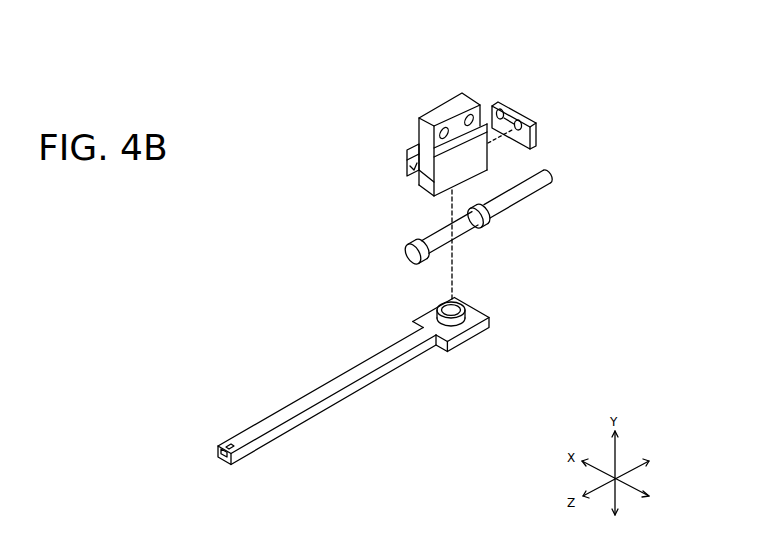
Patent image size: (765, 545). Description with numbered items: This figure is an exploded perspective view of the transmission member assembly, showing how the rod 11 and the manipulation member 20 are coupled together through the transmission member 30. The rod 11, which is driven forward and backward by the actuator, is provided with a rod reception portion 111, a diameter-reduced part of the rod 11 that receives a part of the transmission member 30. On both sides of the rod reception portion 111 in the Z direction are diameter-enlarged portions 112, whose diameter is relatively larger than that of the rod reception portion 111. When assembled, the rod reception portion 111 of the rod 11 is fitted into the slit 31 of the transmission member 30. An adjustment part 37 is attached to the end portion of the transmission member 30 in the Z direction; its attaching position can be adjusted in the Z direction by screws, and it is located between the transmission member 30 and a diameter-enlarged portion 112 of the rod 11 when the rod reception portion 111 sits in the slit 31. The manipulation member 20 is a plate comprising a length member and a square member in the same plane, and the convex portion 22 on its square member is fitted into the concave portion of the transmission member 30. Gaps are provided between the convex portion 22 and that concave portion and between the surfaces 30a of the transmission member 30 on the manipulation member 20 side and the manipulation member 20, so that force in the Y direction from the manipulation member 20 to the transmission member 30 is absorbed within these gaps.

The transmission member 30 is at (408, 162).
The surfaces of the transmission member 30a is at (437, 200).
The slit 31 is at (418, 178).
The adjustment part 37 is at (537, 129).
The rod 11 is at (538, 197).
The rod reception portion 111 is at (456, 236).
The diameter-enlarged portions 112 is at (427, 263).
The convex portion 22 is at (473, 305).
The manipulation member 20 is at (355, 385).